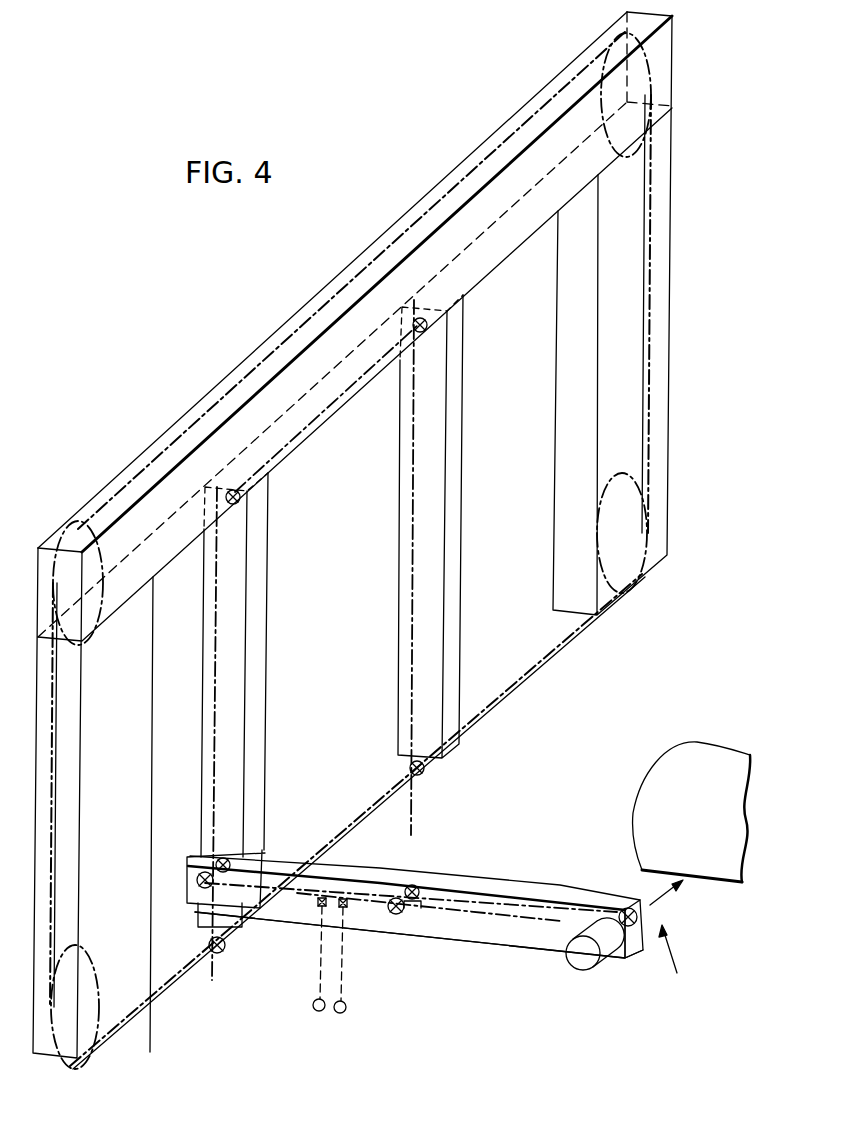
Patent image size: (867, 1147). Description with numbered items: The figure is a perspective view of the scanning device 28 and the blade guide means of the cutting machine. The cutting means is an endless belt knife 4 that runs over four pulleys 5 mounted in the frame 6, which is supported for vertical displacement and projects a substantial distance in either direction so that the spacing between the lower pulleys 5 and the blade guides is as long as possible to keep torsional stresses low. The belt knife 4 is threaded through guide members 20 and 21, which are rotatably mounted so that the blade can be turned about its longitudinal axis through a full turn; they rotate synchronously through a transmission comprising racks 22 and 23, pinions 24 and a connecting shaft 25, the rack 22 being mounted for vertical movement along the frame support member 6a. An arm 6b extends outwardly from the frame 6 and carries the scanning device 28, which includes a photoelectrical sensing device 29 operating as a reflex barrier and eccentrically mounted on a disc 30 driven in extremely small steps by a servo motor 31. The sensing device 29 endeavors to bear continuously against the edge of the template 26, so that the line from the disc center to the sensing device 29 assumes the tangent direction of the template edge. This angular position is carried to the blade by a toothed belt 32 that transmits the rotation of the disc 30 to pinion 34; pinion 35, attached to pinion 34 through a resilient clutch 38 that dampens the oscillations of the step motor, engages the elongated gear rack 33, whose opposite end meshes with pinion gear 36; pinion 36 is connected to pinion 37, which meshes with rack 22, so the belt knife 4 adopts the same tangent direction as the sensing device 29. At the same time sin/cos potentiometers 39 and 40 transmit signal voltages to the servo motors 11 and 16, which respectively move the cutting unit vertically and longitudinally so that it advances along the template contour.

The endless belt knife 4 is at (652, 346).
The pulleys 5 is at (86, 641).
The frame 6 is at (160, 497).
The frame support member 6a is at (448, 558).
The arm 6b is at (475, 935).
The motor 11 is at (316, 1010).
The motor 16 is at (345, 1012).
The guide member 20 is at (222, 953).
The guide member 21 is at (424, 777).
The rack 22 is at (230, 655).
The rack 23 is at (417, 510).
The pinions 24 is at (240, 500).
The connecting shafts 25 is at (355, 390).
The template 26 is at (692, 742).
The scanning device 28 is at (678, 964).
The photoelectrical sensing device 29 is at (687, 887).
The disc 30 is at (633, 928).
The servo motor 31 is at (608, 945).
The toothed belt 32 is at (470, 887).
The rack 33 is at (362, 893).
The pinion 34 is at (414, 885).
The pinion 35 is at (397, 914).
The pinion gear 36 is at (200, 873).
The pinion 37 is at (233, 862).
The resilient clutch 38 is at (414, 908).
The potentiometer 39 is at (318, 908).
The potentiometer 40 is at (347, 910).